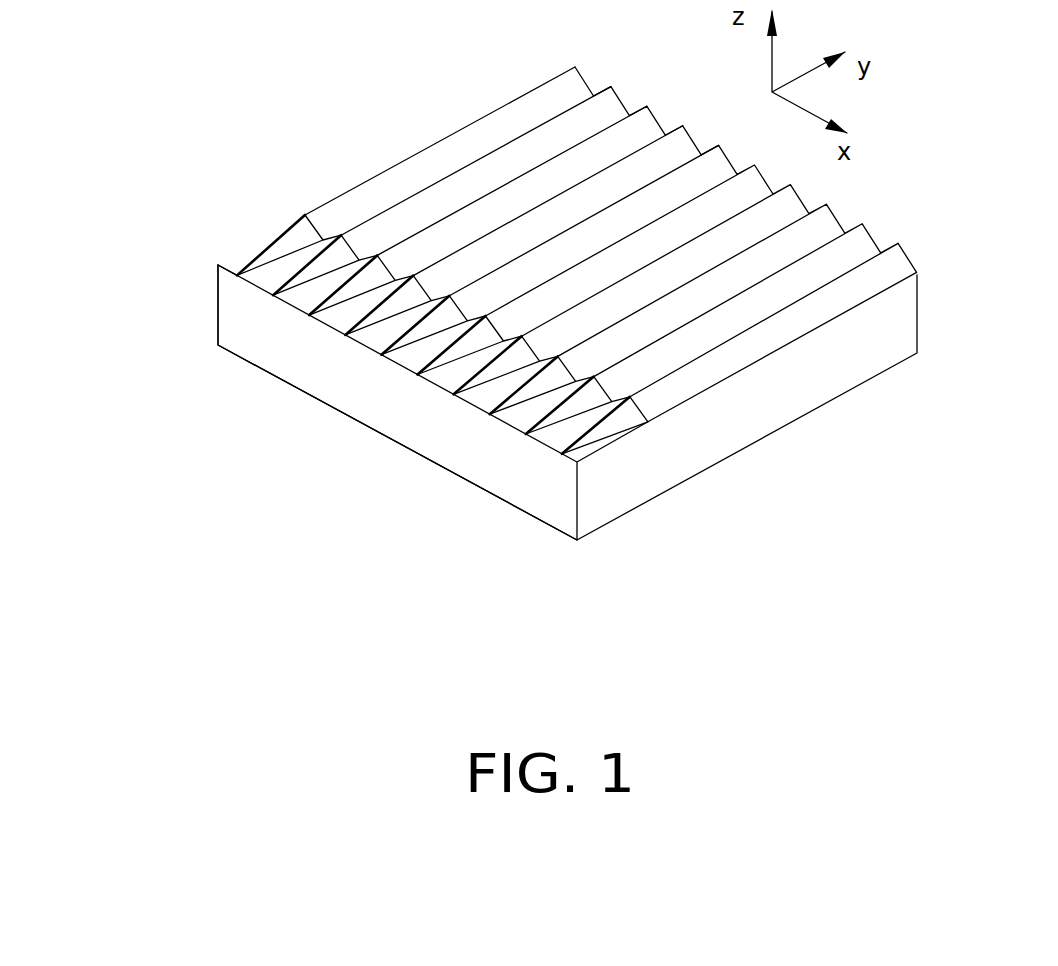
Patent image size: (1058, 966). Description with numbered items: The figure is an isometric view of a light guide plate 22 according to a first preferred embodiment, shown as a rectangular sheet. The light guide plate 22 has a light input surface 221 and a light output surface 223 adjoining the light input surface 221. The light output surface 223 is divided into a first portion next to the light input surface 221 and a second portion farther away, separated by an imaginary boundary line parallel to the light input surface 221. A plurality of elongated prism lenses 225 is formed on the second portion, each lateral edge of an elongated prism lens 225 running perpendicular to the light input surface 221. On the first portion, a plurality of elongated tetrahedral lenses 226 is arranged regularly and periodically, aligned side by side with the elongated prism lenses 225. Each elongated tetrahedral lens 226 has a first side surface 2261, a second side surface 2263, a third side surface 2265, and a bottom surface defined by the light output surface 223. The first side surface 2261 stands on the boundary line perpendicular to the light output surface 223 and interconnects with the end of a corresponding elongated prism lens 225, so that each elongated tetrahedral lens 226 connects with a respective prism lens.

The light guide plate 22 is at (469, 33).
The light input surface 221 is at (245, 320).
The light output surface 223 is at (238, 262).
The elongated prism lens 225 is at (438, 160).
The elongated tetrahedral lens 226 is at (918, 453).
The first side surface 2261 is at (647, 407).
The second side surface 2263 is at (597, 430).
The third side surface 2265 is at (646, 421).